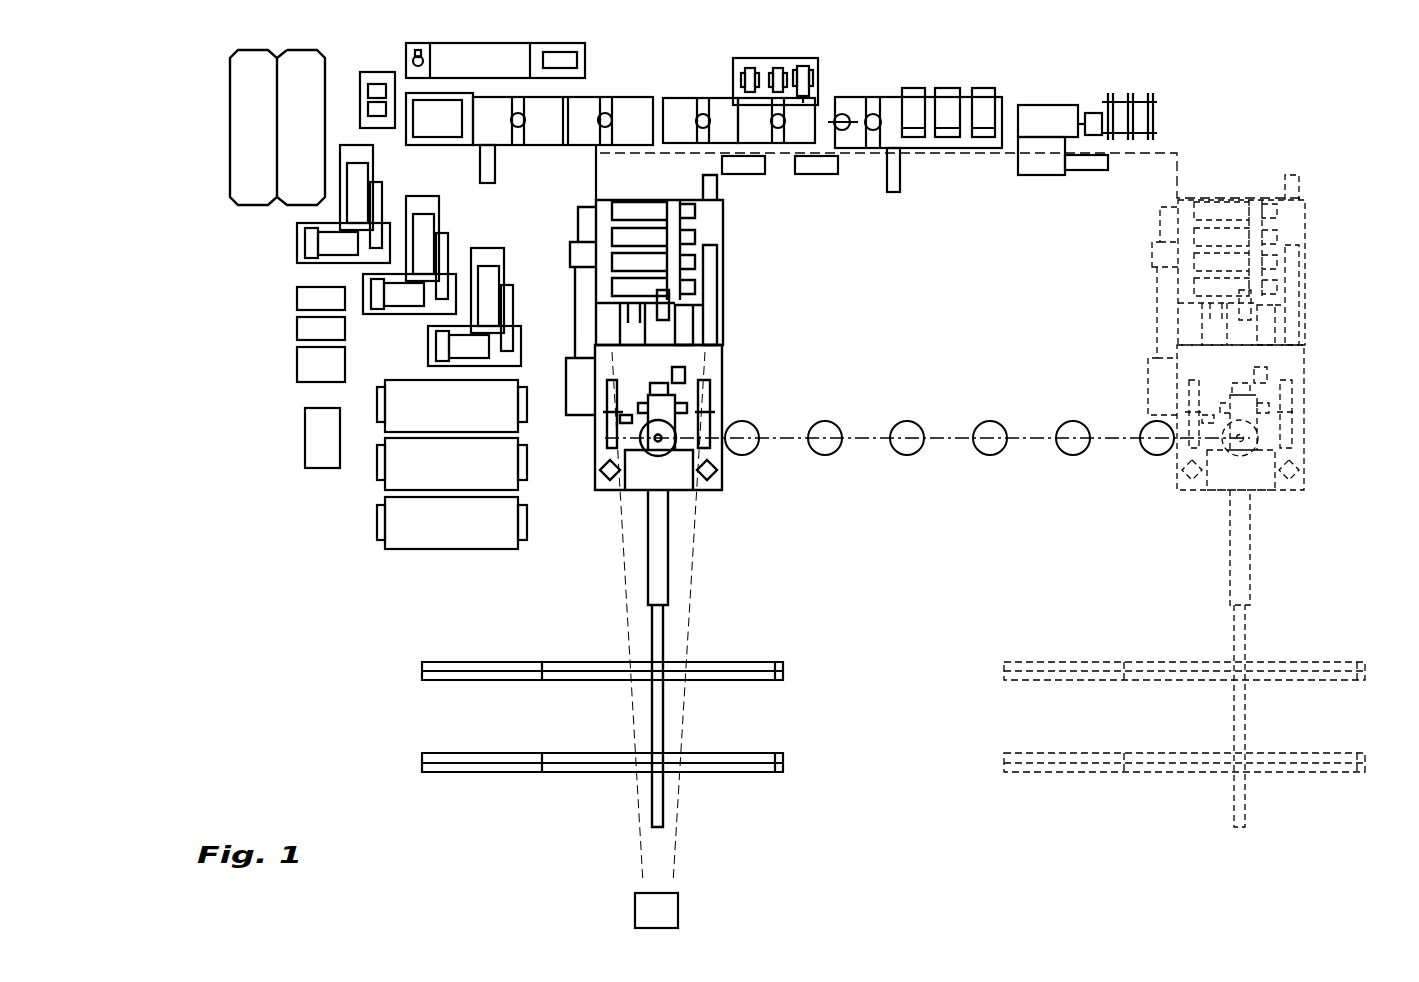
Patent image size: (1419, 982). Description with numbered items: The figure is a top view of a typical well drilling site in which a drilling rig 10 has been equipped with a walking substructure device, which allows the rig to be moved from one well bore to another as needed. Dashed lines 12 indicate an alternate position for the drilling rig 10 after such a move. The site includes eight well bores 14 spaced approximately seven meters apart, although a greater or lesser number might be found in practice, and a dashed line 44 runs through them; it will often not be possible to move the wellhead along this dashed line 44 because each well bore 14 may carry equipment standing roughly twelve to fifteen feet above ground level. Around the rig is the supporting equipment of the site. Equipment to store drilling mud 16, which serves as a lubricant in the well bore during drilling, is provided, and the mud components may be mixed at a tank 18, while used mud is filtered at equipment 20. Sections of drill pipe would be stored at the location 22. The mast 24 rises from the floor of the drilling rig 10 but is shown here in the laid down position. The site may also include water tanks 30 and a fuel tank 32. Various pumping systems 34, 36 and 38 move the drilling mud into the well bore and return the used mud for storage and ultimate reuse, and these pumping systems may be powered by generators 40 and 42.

The drilling rig 10 is at (742, 343).
The dashed lines 12 is at (1302, 265).
The well bores 14 is at (825, 455).
The drilling mud 16 is at (300, 205).
The tank 18 is at (490, 62).
The equipment 20 is at (812, 70).
The drill pipe storage 22 is at (753, 665).
The mast 24 is at (660, 805).
The water tanks 30 is at (377, 392).
The fuel tank 32 is at (380, 530).
The pumping system 34 is at (297, 240).
The pumping system 36 is at (363, 290).
The pumping system 38 is at (428, 350).
The generator 40 is at (297, 300).
The generator 42 is at (297, 330).
The dashed line 44 is at (937, 440).